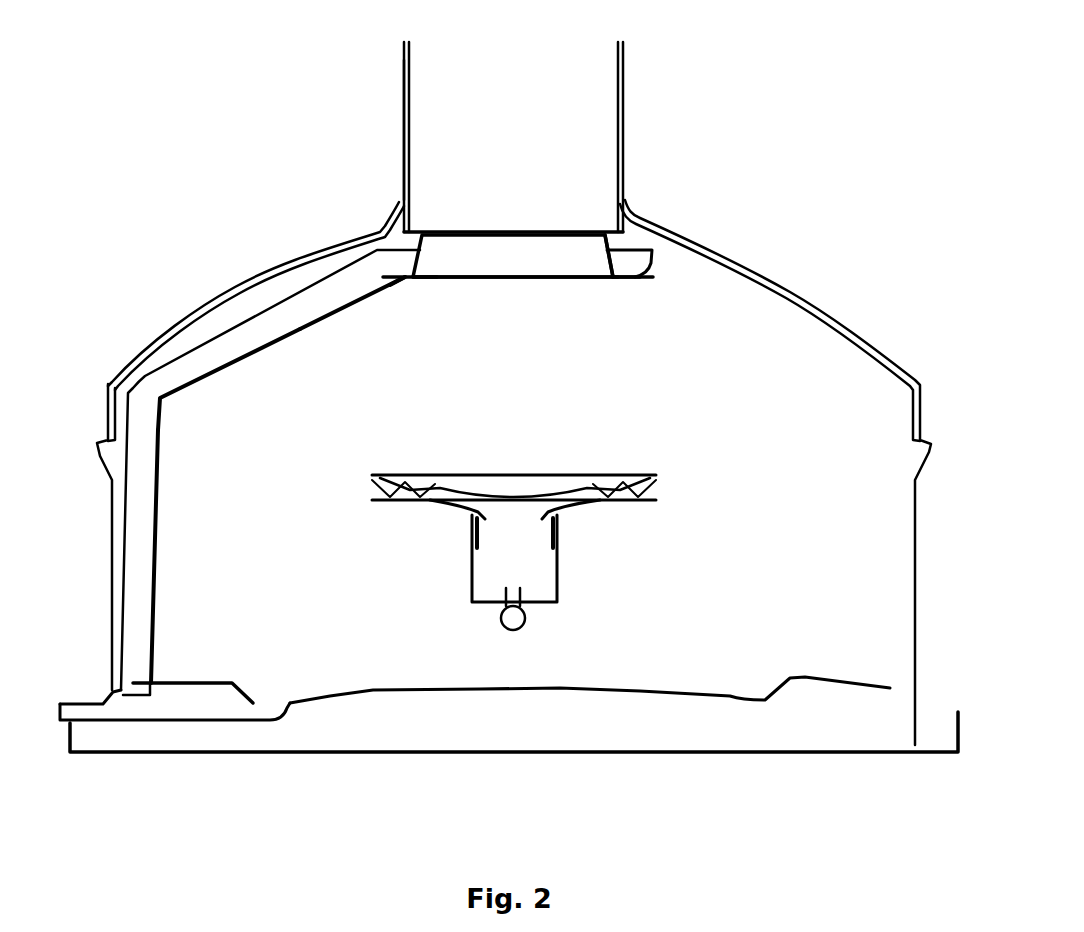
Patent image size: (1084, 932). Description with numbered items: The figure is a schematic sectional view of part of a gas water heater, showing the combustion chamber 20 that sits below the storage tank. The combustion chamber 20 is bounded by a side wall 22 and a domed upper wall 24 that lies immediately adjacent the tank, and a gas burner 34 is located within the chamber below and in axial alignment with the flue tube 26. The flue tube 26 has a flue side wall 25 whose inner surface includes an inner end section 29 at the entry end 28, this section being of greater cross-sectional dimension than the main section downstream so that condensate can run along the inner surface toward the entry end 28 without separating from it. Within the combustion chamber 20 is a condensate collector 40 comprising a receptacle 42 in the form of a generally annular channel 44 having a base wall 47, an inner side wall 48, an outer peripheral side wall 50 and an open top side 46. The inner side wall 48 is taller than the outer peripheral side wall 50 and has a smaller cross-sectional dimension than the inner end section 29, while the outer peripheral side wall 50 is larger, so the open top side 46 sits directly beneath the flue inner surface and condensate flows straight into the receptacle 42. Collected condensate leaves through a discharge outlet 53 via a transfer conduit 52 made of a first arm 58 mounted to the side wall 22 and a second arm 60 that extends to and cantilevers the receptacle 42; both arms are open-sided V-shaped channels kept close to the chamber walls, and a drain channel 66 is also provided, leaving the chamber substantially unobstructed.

The combustion chamber 20 is at (382, 660).
The side wall 22 is at (110, 497).
The upper wall 24 is at (212, 295).
The flue side wall 25 is at (236, 723).
The flue tube 26 is at (632, 78).
The entry end 28 is at (420, 232).
The inner end section 29 is at (408, 108).
The gas burner 34 is at (620, 475).
The condensate collector 40 is at (299, 356).
The receptacle 42 is at (629, 282).
The channel 44 is at (440, 278).
The open top side 46 is at (628, 262).
The base wall 47 is at (618, 282).
The inner side wall 48 is at (593, 258).
The outer peripheral side wall 50 is at (652, 262).
The transfer conduit 52 is at (178, 392).
The discharge outlet 53 is at (407, 262).
The first arm 58 is at (160, 553).
The second arm 60 is at (350, 302).
The drain channel 66 is at (142, 712).